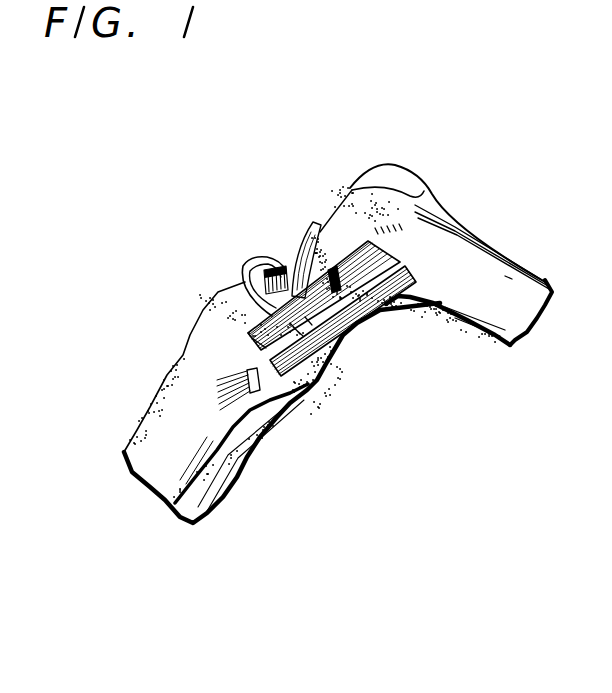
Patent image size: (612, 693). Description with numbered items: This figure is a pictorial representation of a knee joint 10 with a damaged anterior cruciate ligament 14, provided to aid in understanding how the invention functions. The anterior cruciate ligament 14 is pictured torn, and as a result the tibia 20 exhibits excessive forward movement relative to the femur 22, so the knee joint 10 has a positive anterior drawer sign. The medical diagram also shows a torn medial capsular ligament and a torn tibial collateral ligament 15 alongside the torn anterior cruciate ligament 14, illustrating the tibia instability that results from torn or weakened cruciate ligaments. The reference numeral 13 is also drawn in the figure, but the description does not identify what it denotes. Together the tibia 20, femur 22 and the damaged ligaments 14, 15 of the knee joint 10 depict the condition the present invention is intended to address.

The knee joint 10 is at (198, 219).
The thumb flap / strap tabs 13 is at (334, 270).
The anterior cruciate ligament 14 is at (246, 258).
The tibial collateral ligament 15 is at (303, 360).
The tibia 20 is at (183, 406).
The femur 22 is at (497, 263).